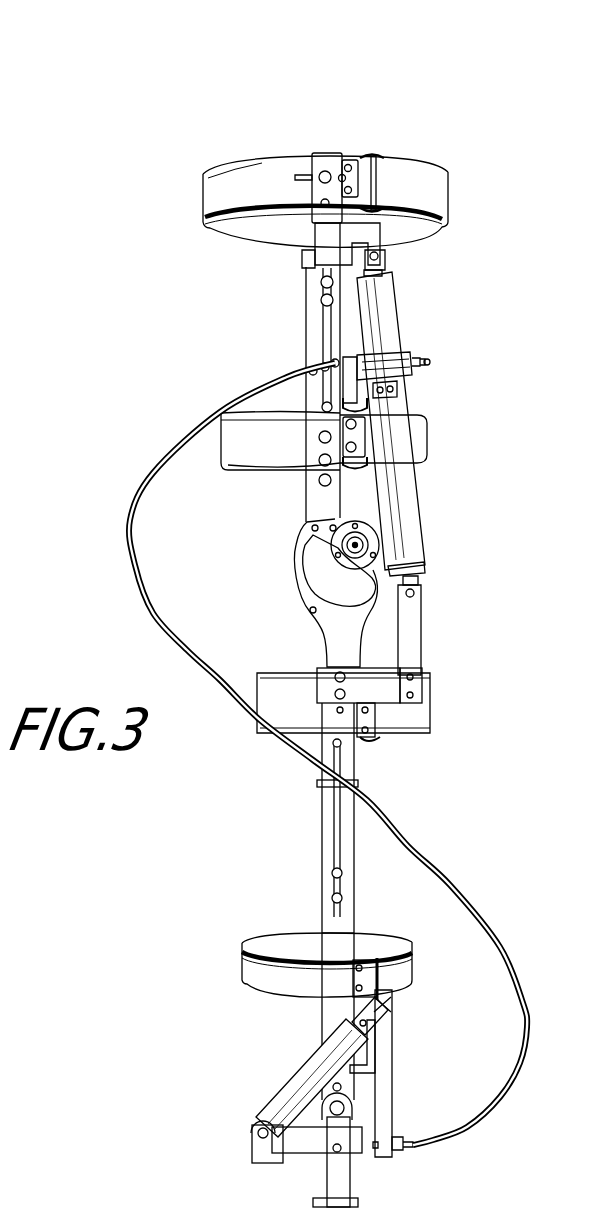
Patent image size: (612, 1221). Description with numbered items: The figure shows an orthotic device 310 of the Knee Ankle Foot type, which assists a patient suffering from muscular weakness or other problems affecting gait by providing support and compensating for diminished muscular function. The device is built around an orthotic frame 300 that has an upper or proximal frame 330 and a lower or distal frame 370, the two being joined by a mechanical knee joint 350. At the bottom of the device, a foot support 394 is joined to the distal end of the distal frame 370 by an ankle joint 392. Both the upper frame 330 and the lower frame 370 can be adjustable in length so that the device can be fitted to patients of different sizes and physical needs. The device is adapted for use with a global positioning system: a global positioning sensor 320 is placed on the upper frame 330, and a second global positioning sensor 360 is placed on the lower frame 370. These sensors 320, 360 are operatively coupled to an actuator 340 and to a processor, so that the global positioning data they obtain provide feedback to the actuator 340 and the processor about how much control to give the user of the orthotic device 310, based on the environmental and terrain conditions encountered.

The orthotic frame 300 is at (325, 153).
The orthotic device 310 is at (467, 148).
The global positioning sensor 320 is at (368, 402).
The upper or proximal frame 330 is at (308, 492).
The actuator 340 is at (400, 493).
The mechanical knee joint 350 is at (297, 590).
The global positioning sensor 360 is at (345, 748).
The lower or distal frame 370 is at (320, 823).
The ankle joint 392 is at (340, 1110).
The foot support 394 is at (356, 1203).